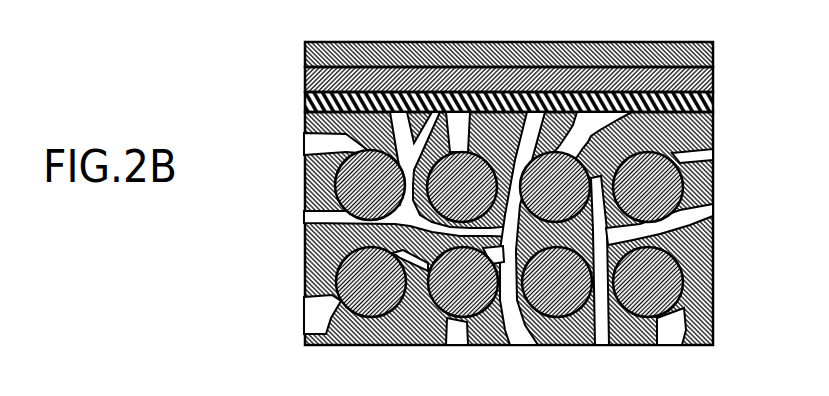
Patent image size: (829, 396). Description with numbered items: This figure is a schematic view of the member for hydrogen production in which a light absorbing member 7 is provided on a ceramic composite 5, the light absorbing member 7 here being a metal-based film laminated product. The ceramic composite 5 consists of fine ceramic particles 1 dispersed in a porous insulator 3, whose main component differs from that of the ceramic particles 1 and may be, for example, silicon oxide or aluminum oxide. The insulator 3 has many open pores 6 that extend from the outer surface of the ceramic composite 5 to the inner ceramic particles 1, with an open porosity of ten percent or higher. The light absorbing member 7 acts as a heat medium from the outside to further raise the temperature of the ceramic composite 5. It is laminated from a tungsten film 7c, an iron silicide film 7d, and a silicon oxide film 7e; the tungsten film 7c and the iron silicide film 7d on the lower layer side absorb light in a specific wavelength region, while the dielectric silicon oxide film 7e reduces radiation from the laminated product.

The ceramic particles 1 is at (318, 178).
The insulator 3 is at (313, 253).
The ceramic composite 5 is at (513, 228).
The open pores 6 is at (312, 140).
The light absorbing member 7 is at (565, 77).
The tungsten film 7c is at (533, 102).
The iron silicide film 7d is at (714, 80).
The silicon oxide film 7e is at (714, 56).